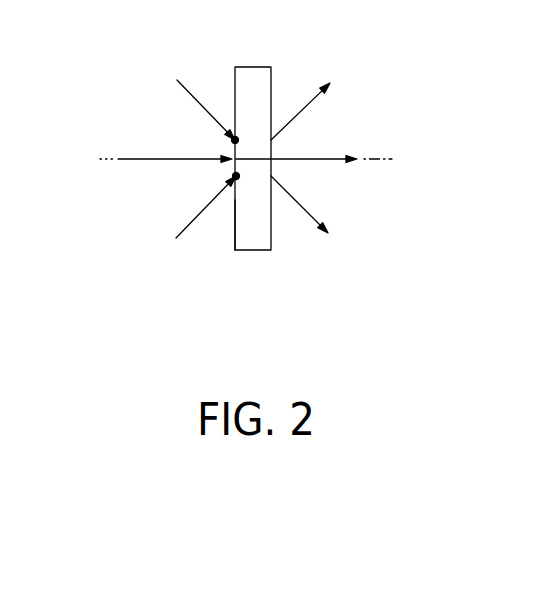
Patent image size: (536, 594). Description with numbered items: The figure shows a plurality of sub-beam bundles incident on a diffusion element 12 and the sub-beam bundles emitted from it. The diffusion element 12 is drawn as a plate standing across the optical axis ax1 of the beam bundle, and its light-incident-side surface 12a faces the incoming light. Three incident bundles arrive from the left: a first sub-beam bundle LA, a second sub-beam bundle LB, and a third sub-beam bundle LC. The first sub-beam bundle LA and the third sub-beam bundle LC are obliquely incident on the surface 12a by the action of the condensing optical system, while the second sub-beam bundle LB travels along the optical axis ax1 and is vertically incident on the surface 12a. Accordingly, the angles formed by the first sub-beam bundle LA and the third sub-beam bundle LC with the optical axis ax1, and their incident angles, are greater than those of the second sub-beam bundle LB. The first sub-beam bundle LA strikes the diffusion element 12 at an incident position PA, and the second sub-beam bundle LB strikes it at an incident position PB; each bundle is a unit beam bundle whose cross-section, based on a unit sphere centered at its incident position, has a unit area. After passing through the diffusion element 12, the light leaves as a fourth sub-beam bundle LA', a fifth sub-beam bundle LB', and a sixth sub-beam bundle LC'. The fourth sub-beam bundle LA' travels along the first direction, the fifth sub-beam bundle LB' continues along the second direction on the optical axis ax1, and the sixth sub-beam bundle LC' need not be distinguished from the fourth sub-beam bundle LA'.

The diffusion element 12 is at (258, 72).
The light-incident-side surface 12a is at (234, 227).
The optical axis ax1 is at (118, 160).
The first sub-beam bundle LA is at (178, 207).
The second sub-beam bundle LB is at (175, 132).
The third sub-beam bundle LC is at (206, 76).
The fourth sub-beam bundle LA' is at (300, 88).
The fifth sub-beam bundle LB' is at (296, 132).
The sixth sub-beam bundle LC' is at (324, 204).
The incident position PA is at (233, 176).
The incident position PB is at (236, 139).